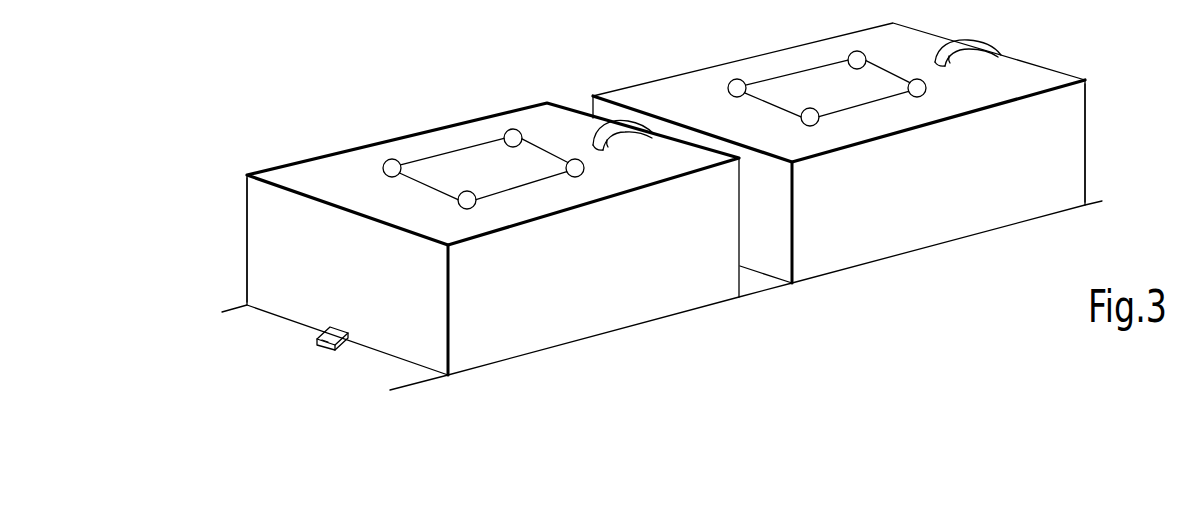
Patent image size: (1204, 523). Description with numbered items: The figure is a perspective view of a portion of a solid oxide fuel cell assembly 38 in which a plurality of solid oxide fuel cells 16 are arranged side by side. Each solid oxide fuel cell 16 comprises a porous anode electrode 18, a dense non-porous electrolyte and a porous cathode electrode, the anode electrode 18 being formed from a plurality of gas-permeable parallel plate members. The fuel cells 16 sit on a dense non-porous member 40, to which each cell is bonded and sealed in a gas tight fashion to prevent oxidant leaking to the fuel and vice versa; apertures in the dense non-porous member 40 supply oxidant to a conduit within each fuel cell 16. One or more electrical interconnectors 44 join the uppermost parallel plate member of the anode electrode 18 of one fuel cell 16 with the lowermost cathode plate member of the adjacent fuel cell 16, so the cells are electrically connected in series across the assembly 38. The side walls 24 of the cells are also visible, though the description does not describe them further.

The solid oxide fuel cell 16 is at (527, 97).
The porous anode electrode 18 is at (342, 170).
The side wall 24 is at (266, 225).
The solid oxide fuel cell assembly 38 is at (978, 326).
The dense non-porous member 40 is at (707, 325).
The electrical interconnector 44 is at (625, 118).